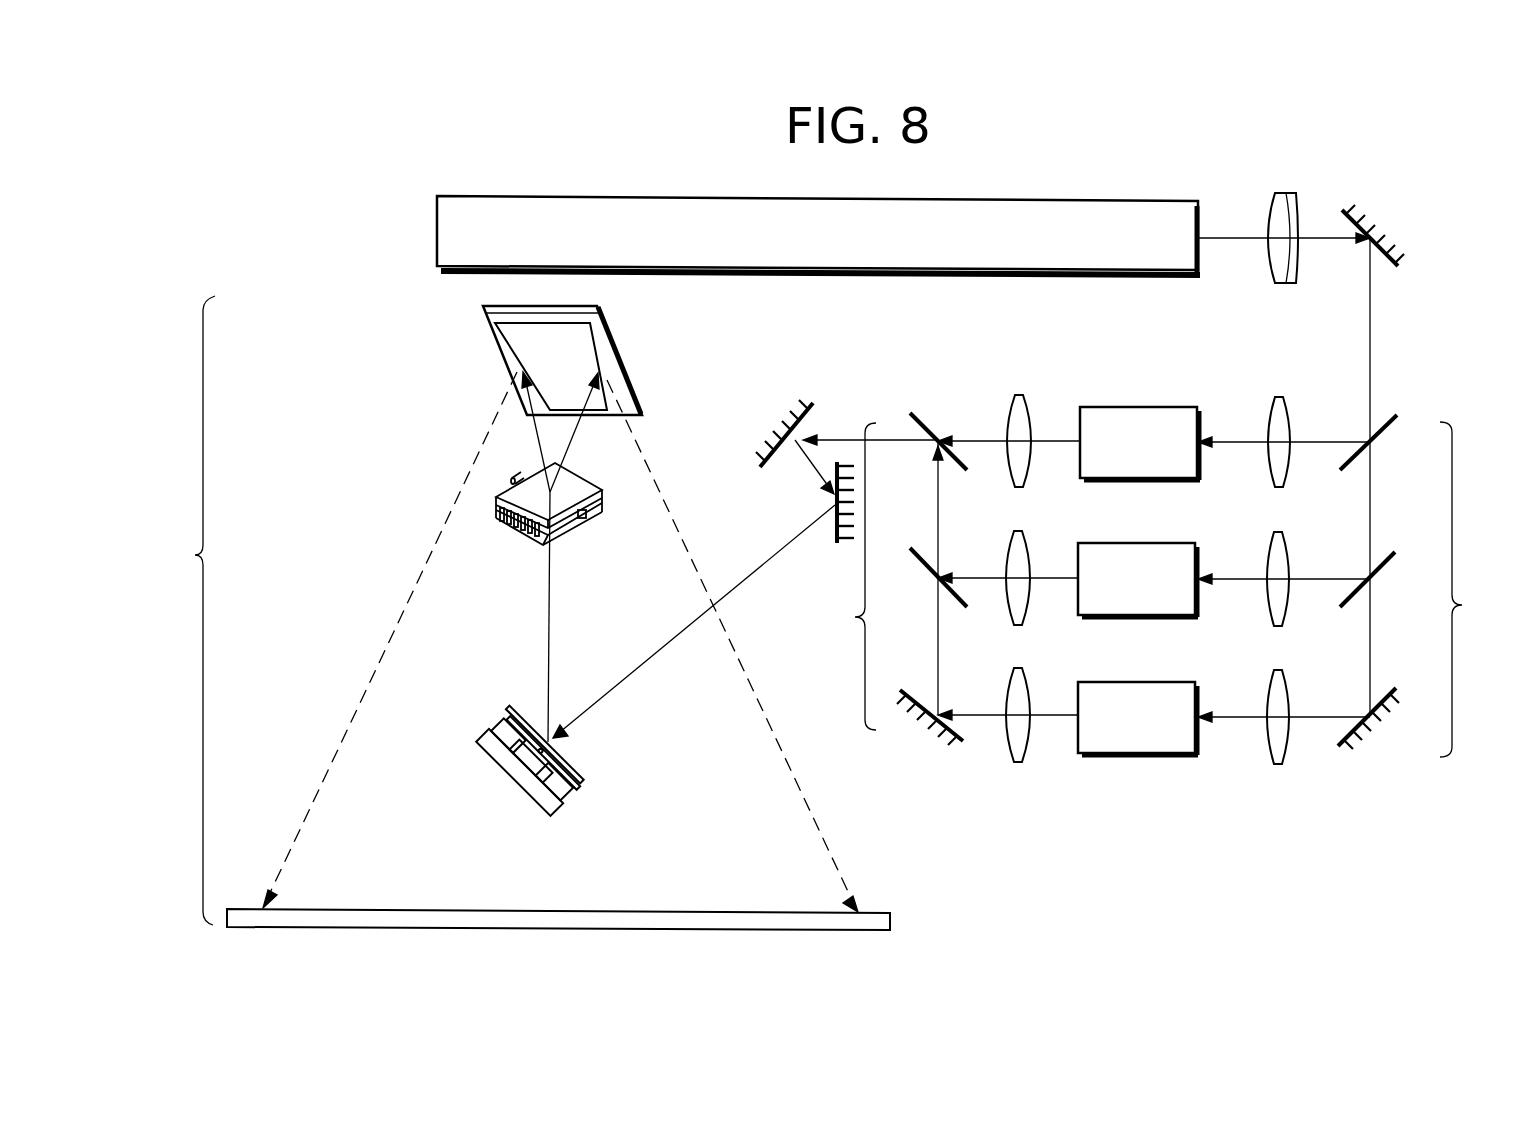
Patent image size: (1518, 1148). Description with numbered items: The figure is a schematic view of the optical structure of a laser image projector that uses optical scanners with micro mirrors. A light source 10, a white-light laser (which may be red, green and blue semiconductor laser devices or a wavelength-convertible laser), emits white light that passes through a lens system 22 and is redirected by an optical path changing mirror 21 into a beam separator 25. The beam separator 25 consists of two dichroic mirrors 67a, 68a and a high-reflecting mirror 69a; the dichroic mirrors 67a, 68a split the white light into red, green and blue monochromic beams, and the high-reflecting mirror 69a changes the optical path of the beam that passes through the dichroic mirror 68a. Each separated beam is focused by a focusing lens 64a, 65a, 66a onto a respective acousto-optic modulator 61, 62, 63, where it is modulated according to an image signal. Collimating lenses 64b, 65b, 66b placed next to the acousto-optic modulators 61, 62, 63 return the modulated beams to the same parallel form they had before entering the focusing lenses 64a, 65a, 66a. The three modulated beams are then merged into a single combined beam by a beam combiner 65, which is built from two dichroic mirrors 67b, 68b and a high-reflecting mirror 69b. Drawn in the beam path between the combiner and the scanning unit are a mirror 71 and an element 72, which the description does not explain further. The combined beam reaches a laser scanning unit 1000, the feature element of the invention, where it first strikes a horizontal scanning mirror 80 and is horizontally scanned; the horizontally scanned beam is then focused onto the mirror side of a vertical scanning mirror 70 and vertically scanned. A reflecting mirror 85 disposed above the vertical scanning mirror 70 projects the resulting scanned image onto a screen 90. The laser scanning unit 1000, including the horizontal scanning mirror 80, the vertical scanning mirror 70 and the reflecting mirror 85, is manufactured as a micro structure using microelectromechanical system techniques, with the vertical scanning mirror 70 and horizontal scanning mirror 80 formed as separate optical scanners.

The light source 10 is at (898, 274).
The optical path changing mirror 21 is at (1372, 216).
The lens system 22 is at (1282, 287).
The beam separator 25 is at (1469, 589).
The acousto-optic modulator 61 is at (1130, 407).
The acousto-optic modulator 62 is at (1125, 543).
The acousto-optic modulator 63 is at (1125, 682).
The focusing lens 64a is at (1283, 400).
The collimating lens 64b is at (1018, 485).
The beam combiner 65 is at (848, 576).
The focusing lens 65a is at (1283, 537).
The collimating lens 65b is at (1018, 622).
The focusing lens 66a is at (1283, 673).
The collimating lens 66b is at (1018, 760).
The dichroic mirror 67a is at (1385, 430).
The dichroic mirror 67b is at (920, 420).
The dichroic mirror 68a is at (1385, 565).
The dichroic mirror 68b is at (920, 558).
The high-reflecting mirror 69a is at (1400, 700).
The high-reflecting mirror 69b is at (920, 700).
The vertical scanning mirror 70 is at (505, 523).
The reflecting mirror 71 is at (790, 430).
The diffraction grating 72 is at (835, 543).
The horizontal scanning mirror 80 is at (557, 806).
The reflecting mirror 85 is at (483, 309).
The screen 90 is at (887, 912).
The laser scanning unit 1000 is at (176, 610).